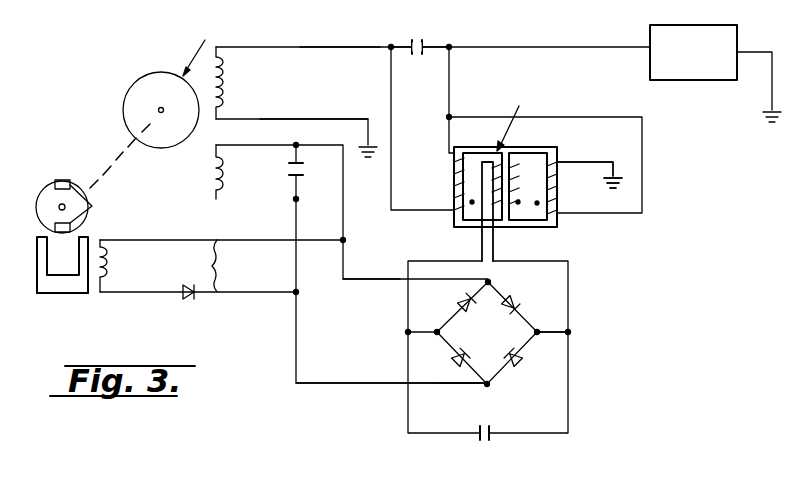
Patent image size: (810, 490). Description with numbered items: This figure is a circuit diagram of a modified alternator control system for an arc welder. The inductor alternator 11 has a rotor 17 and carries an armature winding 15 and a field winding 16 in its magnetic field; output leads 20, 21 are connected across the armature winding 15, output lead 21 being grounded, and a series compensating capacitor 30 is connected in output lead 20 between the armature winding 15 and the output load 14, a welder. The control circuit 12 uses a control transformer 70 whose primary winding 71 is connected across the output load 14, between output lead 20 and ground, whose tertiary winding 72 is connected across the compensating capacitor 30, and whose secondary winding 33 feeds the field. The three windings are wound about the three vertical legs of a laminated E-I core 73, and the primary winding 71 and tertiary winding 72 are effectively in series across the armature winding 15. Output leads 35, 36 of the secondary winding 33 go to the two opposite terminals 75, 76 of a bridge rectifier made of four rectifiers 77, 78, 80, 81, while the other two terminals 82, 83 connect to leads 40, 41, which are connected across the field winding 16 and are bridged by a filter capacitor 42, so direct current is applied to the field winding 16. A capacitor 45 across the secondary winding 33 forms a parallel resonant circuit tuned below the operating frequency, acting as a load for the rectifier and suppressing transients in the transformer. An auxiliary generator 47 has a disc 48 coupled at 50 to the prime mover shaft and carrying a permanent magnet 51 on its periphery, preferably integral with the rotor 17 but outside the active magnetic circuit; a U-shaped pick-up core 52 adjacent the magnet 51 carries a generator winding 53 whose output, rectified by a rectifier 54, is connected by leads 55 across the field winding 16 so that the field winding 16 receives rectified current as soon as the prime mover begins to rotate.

The inductor alternator 11 is at (199, 45).
The rotor 17 is at (150, 72).
The coupling 50 is at (112, 150).
The disc 48 is at (46, 200).
The permanent magnet 51 is at (92, 206).
The core or pick-up 52 is at (39, 295).
The auxiliary generator 47 is at (78, 294).
The armature winding 15 is at (228, 80).
The field winding 16 is at (232, 170).
The generator winding 53 is at (118, 272).
The rectifier 54 is at (186, 294).
The leads 55 is at (230, 266).
The output lead 20 is at (342, 46).
The output lead 21 is at (309, 118).
The series compensating capacitor 30 is at (426, 44).
The output load 14 is at (648, 39).
The filter capacitor 42 is at (304, 178).
The lead 41 is at (356, 278).
The lead 40 is at (343, 384).
The control circuit 12 is at (560, 228).
The control transformer 70 is at (516, 116).
The tertiary winding 72 is at (454, 176).
The terminal 82 is at (480, 270).
The secondary winding 33 is at (514, 170).
The primary winding 71 is at (560, 196).
The E-I core 73 is at (560, 152).
The output lead 35 is at (570, 301).
The output lead 36 is at (406, 293).
The rectifier 78 is at (472, 298).
The terminal 76 is at (441, 318).
The rectifier 77 is at (516, 296).
The rectifier 81 is at (462, 346).
The rectifier 80 is at (522, 362).
The terminal 75 is at (538, 330).
The terminal 83 is at (485, 387).
The capacitor 45 is at (477, 440).